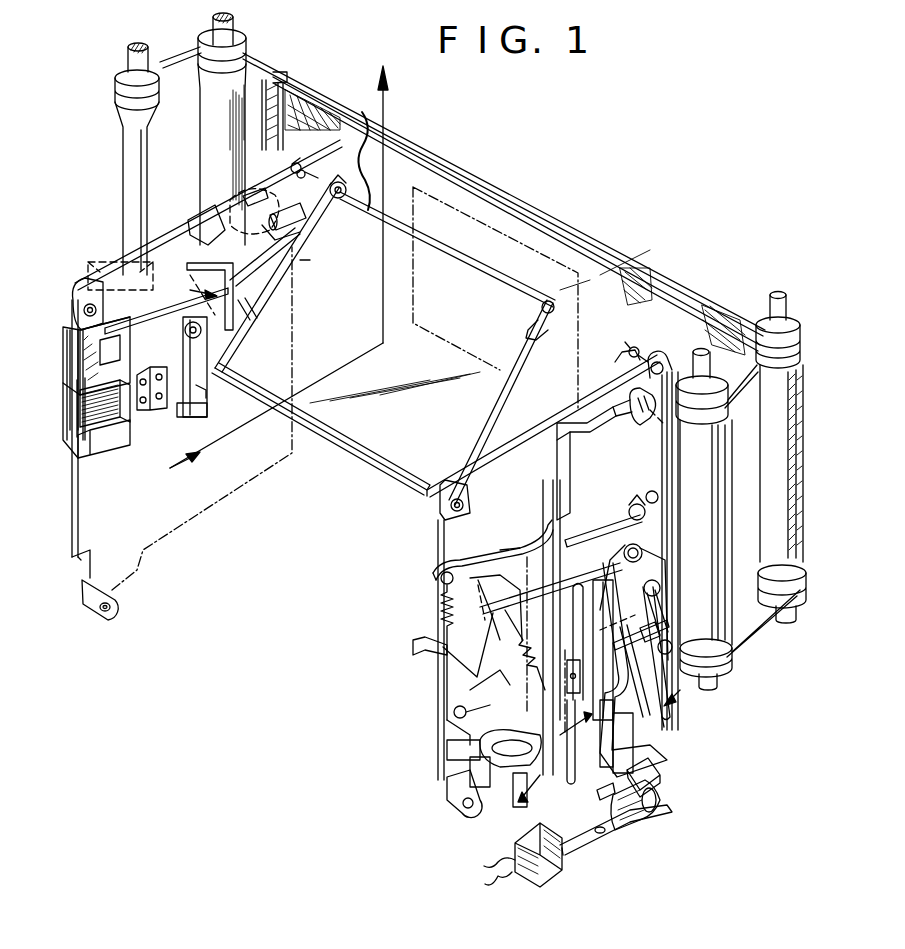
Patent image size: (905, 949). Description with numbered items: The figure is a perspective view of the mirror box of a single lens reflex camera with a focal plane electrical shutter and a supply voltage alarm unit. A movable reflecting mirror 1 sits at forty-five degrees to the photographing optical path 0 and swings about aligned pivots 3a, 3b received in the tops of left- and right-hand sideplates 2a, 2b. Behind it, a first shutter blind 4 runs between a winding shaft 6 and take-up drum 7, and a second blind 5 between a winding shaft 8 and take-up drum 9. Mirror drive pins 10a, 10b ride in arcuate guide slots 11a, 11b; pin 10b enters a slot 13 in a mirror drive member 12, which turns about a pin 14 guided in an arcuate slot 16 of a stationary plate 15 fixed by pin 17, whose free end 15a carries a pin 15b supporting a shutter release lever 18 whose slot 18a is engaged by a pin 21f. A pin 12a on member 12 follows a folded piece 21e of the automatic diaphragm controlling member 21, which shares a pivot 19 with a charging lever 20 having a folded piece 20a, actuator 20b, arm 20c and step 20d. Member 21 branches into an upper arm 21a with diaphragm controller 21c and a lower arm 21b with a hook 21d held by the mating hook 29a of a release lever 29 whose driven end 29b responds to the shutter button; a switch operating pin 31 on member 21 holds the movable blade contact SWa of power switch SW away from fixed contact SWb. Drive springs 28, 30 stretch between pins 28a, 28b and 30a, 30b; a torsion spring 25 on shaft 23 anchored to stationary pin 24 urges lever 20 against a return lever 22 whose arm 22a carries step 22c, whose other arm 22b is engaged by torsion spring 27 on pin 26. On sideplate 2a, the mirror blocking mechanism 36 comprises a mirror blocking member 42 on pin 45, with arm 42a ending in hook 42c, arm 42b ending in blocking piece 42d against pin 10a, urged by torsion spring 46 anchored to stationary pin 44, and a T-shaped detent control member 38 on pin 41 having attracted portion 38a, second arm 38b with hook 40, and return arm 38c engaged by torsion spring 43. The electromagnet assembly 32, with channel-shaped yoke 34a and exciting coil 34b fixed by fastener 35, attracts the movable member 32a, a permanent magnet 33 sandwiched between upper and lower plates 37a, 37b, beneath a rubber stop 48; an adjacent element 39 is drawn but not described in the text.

The movable reflecting mirror 1 is at (474, 296).
The left-hand sideplate 2a is at (140, 242).
The right-hand sideplate 2b is at (668, 370).
The pivot 3a is at (300, 164).
The pivot 3b is at (634, 346).
The first shutter blind 4 is at (626, 280).
The second blind 5 is at (273, 72).
The winding shaft 6 is at (128, 150).
The take-up drum 7 is at (766, 422).
The winding shaft 8 is at (203, 114).
The take-up drum 9 is at (718, 454).
The mirror drive pin 10a is at (305, 222).
The mirror drive pin 10b is at (520, 330).
The arcuate guide slot 11a is at (318, 190).
The arcuate guide slot 11b is at (620, 376).
The mirror drive member 12 is at (560, 466).
The pin 12a is at (510, 600).
The slot 13 is at (642, 423).
The pin 14 is at (452, 785).
The stationary plate 15 is at (485, 748).
The free end 15a is at (613, 730).
The pin 15b is at (620, 748).
The arcuate slot 16 is at (484, 760).
The pin 17 is at (445, 752).
The shutter release lever 18 is at (576, 748).
The slot 18a is at (577, 600).
The pivot 19 is at (645, 552).
The charging lever 20 is at (633, 508).
The folded piece 20a is at (620, 700).
The actuator 20b is at (662, 780).
The arm 20c is at (523, 550).
The step 20d is at (600, 538).
The automatic diaphragm controlling member 21 is at (498, 590).
The upper arm 21a is at (445, 674).
The lower arm 21b is at (453, 711).
The free end 21c is at (416, 638).
The hook 21d is at (505, 690).
The folded piece 21e is at (515, 590).
The pin 21f is at (618, 624).
The return lever 22 is at (669, 653).
The horizontally extending arm 22a is at (612, 652).
The other arm 22b is at (668, 716).
The step 22c is at (658, 630).
The shaft 23 is at (651, 492).
The stationary pin 24 is at (662, 585).
The torsion spring 25 is at (552, 518).
The pin 26 is at (672, 646).
The torsion spring 27 is at (663, 612).
The drive spring 28 is at (440, 602).
The pin 28a is at (440, 582).
The pin 28b is at (455, 727).
The release lever 29 is at (540, 766).
The mating hook 29a is at (505, 625).
The driven end 29b is at (513, 805).
The drive spring 30 is at (488, 600).
The pin 30a is at (482, 560).
The pin 30b is at (580, 675).
The switch operating pin 31 is at (597, 795).
The electromagnet assembly 32 is at (64, 440).
The movable member 32a is at (72, 334).
The permanent magnet 33 is at (64, 352).
The channel-shaped yoke 34a is at (118, 455).
The exciting coil 34b is at (78, 414).
The fastener 35 is at (150, 410).
The mirror blocking mechanism 36 is at (158, 298).
The upper plate 37a is at (72, 322).
The lower plate 37b is at (76, 396).
The detent control member 38 is at (188, 352).
The attracted portion 38a is at (78, 368).
The second arm 38b is at (205, 335).
The return arm 38c is at (198, 412).
The rod 39 is at (138, 312).
The hook 40 is at (290, 262).
The pin 41 is at (226, 355).
The mirror blocking member 42 is at (258, 235).
The downwardly extending arm 42a is at (292, 270).
The arm 42b is at (302, 238).
The mating hook 42c is at (246, 316).
The blocking piece 42d is at (248, 190).
The torsion spring 43 is at (207, 388).
The stationary pin 44 is at (228, 290).
The pin 45 is at (238, 200).
The torsion spring 46 is at (198, 220).
The stop 48 is at (92, 276).
The photographing optical path 0 is at (220, 440).
The power switch SW is at (548, 874).
The movable blade contact SWa is at (620, 828).
The fixed blade contact SWb is at (588, 842).